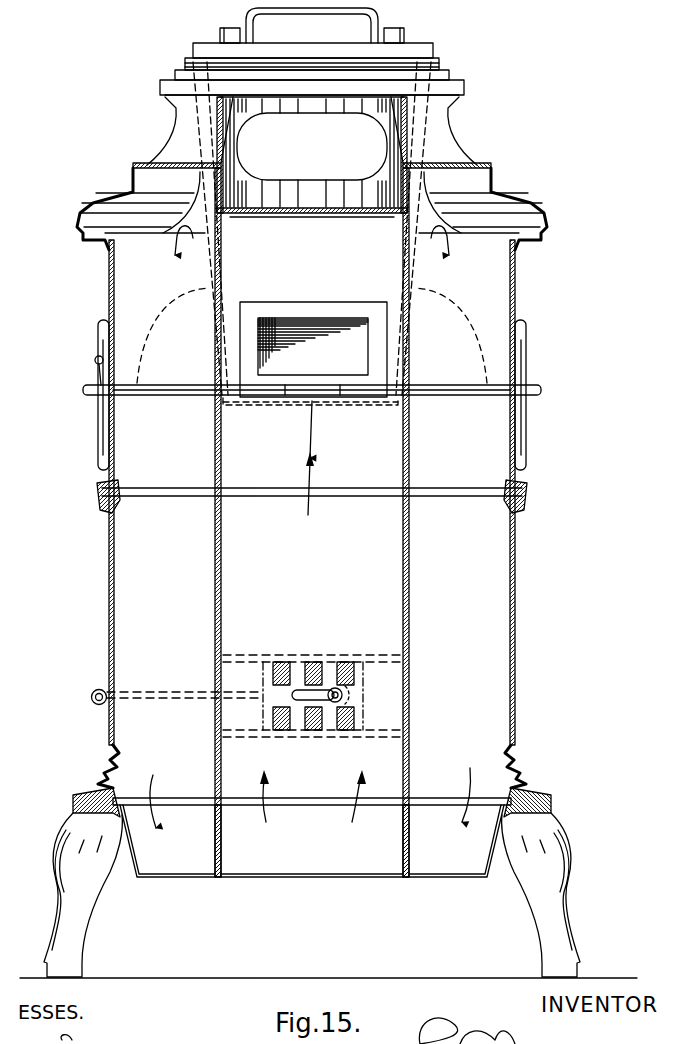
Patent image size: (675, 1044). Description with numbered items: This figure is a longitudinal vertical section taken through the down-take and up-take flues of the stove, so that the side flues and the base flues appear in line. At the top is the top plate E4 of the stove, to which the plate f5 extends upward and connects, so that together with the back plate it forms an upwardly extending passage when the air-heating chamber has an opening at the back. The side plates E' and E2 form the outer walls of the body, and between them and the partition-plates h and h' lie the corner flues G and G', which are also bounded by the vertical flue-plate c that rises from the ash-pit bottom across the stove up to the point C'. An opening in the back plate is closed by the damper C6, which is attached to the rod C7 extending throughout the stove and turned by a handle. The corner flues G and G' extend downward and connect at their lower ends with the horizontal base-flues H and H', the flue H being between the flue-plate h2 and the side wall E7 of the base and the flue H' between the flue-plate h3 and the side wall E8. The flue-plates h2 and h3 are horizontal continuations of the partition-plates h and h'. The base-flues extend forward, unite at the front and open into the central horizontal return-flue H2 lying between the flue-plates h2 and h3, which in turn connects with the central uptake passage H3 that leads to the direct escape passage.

The top plate E4 is at (469, 132).
The plate f5 is at (312, 157).
The side plate E2 is at (95, 379).
The side plate E' is at (531, 379).
The damper C6 is at (313, 349).
The rod C7 is at (298, 398).
The point C' is at (298, 464).
The partition-plate h is at (224, 522).
The partition-plate h' is at (413, 522).
The vertical flue-plate c is at (312, 539).
The corner flue G is at (137, 492).
The corner flue G' is at (477, 492).
The central uptake passage H3 is at (246, 665).
The side wall of base E7 is at (120, 822).
The side wall of base E8 is at (504, 826).
The base-flue H is at (167, 826).
The flue-plate h2 is at (229, 841).
The central horizontal return-flue H2 is at (312, 823).
The flue-plate h3 is at (394, 841).
The base-flue H' is at (456, 822).